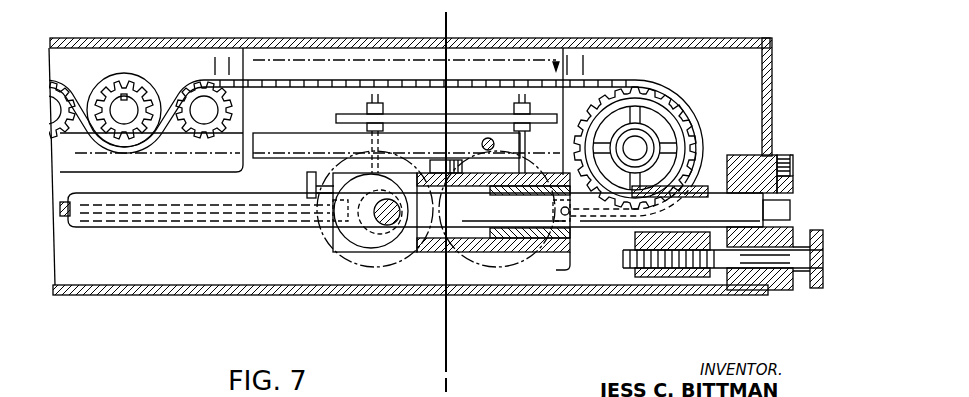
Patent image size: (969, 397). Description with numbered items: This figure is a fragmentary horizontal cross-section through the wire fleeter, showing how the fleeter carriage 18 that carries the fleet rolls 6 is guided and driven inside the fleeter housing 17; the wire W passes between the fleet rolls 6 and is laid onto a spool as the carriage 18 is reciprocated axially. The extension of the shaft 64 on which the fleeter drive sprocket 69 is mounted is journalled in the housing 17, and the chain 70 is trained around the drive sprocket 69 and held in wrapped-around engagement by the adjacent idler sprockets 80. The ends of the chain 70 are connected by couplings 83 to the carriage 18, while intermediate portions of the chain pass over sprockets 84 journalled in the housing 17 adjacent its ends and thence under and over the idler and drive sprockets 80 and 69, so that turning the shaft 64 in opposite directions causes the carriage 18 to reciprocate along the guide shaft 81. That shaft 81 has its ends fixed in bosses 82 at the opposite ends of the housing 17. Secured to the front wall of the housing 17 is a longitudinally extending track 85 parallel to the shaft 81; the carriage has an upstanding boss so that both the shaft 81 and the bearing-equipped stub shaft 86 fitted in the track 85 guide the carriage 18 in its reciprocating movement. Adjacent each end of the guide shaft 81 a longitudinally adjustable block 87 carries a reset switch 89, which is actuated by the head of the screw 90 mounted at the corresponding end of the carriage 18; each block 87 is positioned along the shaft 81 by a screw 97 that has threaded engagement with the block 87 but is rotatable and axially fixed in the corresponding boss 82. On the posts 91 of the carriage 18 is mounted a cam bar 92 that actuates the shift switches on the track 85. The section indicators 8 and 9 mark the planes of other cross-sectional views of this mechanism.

The fleet rolls 6 is at (380, 270).
The section line 8- 8 is at (723, 172).
The section line 9- 9 is at (633, 68).
The fleeter housing 17 is at (773, 91).
The fleeter carriage 18 is at (485, 258).
The shaft 64 is at (117, 106).
The fleeter drive sprocket 69 is at (138, 83).
The chain 70 is at (404, 92).
The idler sprockets 80 is at (57, 82).
The shaft 81 is at (206, 229).
The bosses 82 is at (797, 155).
The couplings 83 is at (333, 238).
The sprockets 84 is at (578, 103).
The track 85 is at (307, 132).
The stub shaft 86 is at (453, 160).
The block 87 is at (697, 268).
The reset switch 89 is at (680, 170).
The screw 90 is at (307, 182).
The posts 91 is at (372, 167).
The cam bar 92 is at (458, 114).
The screw 97 is at (818, 289).
The wire W is at (449, 17).